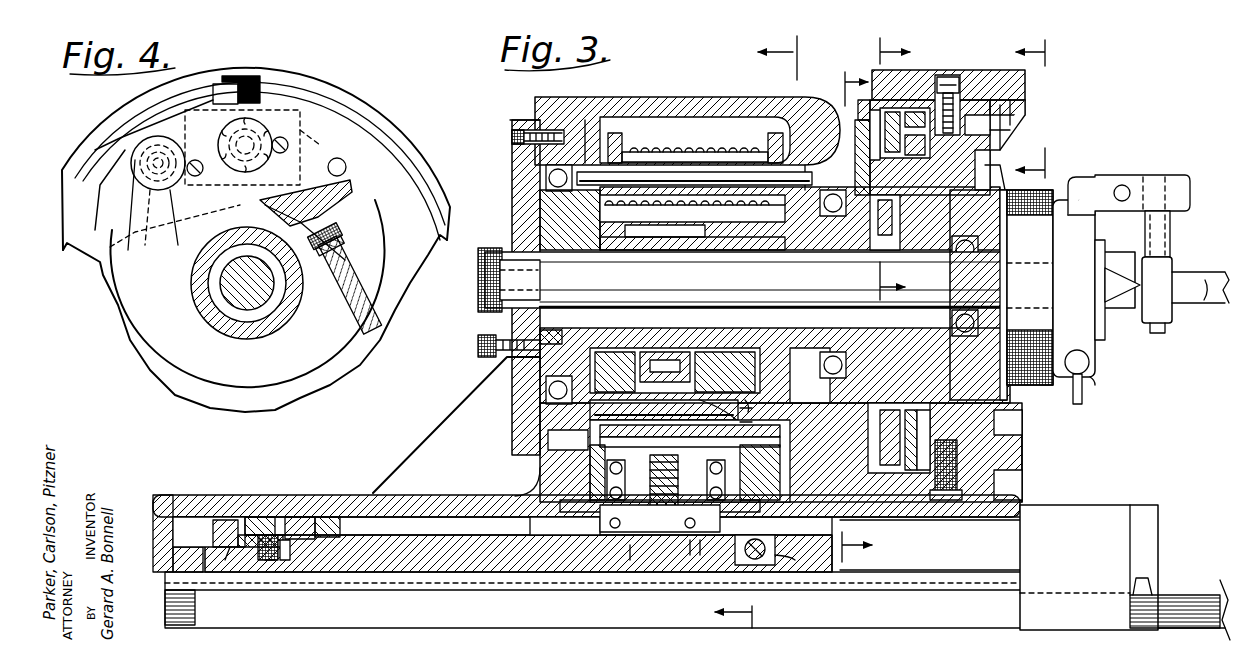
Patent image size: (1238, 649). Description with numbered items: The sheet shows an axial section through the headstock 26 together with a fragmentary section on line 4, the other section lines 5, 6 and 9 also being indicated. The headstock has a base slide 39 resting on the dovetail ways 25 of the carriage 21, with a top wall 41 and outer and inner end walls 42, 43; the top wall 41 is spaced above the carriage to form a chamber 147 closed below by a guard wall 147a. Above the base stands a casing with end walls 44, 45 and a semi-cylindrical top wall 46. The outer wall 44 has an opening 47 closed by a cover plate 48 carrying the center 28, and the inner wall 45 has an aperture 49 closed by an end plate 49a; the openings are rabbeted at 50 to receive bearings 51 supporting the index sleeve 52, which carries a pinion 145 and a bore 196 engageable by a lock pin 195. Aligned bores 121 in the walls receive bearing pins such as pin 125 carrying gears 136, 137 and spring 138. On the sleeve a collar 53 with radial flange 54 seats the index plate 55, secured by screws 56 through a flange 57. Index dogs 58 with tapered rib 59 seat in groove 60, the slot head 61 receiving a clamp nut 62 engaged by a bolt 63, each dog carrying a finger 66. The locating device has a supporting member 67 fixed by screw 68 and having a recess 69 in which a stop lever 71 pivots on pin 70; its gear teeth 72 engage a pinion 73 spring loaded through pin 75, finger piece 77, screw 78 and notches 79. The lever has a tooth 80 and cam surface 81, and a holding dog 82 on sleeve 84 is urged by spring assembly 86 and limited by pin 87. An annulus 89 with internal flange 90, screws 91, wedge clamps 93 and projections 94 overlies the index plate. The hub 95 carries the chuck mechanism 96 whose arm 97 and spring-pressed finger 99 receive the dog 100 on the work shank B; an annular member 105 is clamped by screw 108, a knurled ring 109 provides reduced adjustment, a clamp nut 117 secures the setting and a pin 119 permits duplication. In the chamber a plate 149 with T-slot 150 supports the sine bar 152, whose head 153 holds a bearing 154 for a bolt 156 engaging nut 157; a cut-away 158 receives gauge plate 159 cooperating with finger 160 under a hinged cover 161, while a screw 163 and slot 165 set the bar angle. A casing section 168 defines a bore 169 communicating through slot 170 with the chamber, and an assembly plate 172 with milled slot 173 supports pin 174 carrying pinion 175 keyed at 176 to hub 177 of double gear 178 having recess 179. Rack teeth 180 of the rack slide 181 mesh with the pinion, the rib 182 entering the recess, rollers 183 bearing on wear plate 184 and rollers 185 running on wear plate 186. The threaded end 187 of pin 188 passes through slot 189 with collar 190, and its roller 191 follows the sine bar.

In FIG. 3, the carriage 21 is at (1188, 645).
In FIG. 3, the dovetail ways 25 is at (1160, 600).
In FIG. 3, the headstock 26 is at (530, 112).
In FIG. 3, the center 28 is at (480, 292).
In FIG. 3, the base slide 39 is at (1112, 518).
In FIG. 3, the top wall 41 is at (429, 497).
In FIG. 3, the outer end wall 42 is at (158, 502).
In FIG. 3, the inner end wall 43 is at (1150, 520).
In FIG. 3, the outer end wall of casing 44 is at (555, 470).
In FIG. 3, the inner end wall of casing 45 is at (935, 458).
In FIG. 3, the top wall 46 is at (660, 100).
In FIG. 3, the opening 47 is at (600, 238).
In FIG. 3, the cover plate 48 is at (512, 152).
In FIG. 3, the aperture 49 is at (806, 347).
In FIG. 3, the end plate 49a is at (930, 400).
In FIG. 3, the rabbet 50 is at (512, 178).
In FIG. 3, the bearings 51 is at (540, 392).
In FIG. 3, the index sleeve 52 is at (745, 235).
In FIG. 3, the collar 53 is at (995, 237).
In FIG. 3, the radial flange 54 is at (930, 414).
In FIG. 3, the index plate 55 is at (930, 440).
In FIG. 3, the screws 56 is at (1020, 162).
In FIG. 3, the flange 57 is at (1010, 462).
In FIG. 4, the index dogs 58 is at (224, 88).
In FIG. 3, the index dogs 58 is at (928, 82).
In FIG. 3, the tapered rib 59 is at (982, 112).
In FIG. 3, the groove 60 is at (990, 102).
In FIG. 3, the enlarged head 61 is at (1030, 112).
In FIG. 3, the clamp nut 62 is at (922, 75).
In FIG. 3, the bolt 63 is at (952, 76).
In FIG. 4, the finger 66 is at (250, 90).
In FIG. 3, the finger 66 is at (862, 95).
In FIG. 4, the supporting member 67 is at (150, 320).
In FIG. 3, the supporting member 67 is at (958, 240).
In FIG. 4, the screw 68 is at (365, 238).
In FIG. 4, the recess 69 is at (135, 230).
In FIG. 3, the recess 69 is at (866, 238).
In FIG. 4, the pin 70 is at (345, 172).
In FIG. 4, the stop lever 71 is at (320, 145).
In FIG. 3, the stop lever 71 is at (885, 107).
In FIG. 4, the gear teeth 72 is at (185, 130).
In FIG. 4, the pinion 73 is at (125, 175).
In FIG. 4, the pin 75 is at (158, 232).
In FIG. 4, the finger piece 77 is at (132, 152).
In FIG. 4, the screw 78 is at (205, 185).
In FIG. 4, the notches 79 is at (190, 225).
In FIG. 4, the tooth 80 is at (214, 86).
In FIG. 4, the cam surface 81 is at (212, 96).
In FIG. 3, the holding dog 82 is at (915, 78).
In FIG. 3, the sleeve 84 is at (862, 105).
In FIG. 4, the spring assembly 86 is at (268, 132).
In FIG. 3, the spring assembly 86 is at (850, 138).
In FIG. 4, the pin 87 is at (356, 204).
In FIG. 3, the pin 87 is at (920, 238).
In FIG. 4, the annulus 89 is at (400, 135).
In FIG. 3, the annulus 89 is at (1030, 76).
In FIG. 3, the internal radial flange 90 is at (1005, 100).
In FIG. 3, the screws 91 is at (1030, 125).
In FIG. 3, the wedge clamps 93 is at (1020, 142).
In FIG. 3, the lateral projections 94 is at (1022, 490).
In FIG. 3, the hub portion 95 is at (1009, 336).
In FIG. 3, the rotative chuck mechanism 96 is at (1094, 378).
In FIG. 3, the arm 97 is at (1088, 182).
In FIG. 3, the spring-pressed finger 99 is at (1180, 186).
In FIG. 3, the dog 100 is at (1168, 228).
In FIG. 3, the annular member 105 is at (1082, 222).
In FIG. 3, the screw 108 is at (1090, 363).
In FIG. 3, the knurled ring 109 is at (1073, 388).
In FIG. 3, the clamp nut 117 is at (1112, 282).
In FIG. 3, the pin 119 is at (1003, 230).
In FIG. 3, the bores 121 is at (586, 120).
In FIG. 3, the bearing pin 125 is at (678, 173).
In FIG. 3, the gear 136 is at (772, 140).
In FIG. 3, the gear 137 is at (616, 138).
In FIG. 3, the spring 138 is at (720, 148).
In FIG. 3, the pinion 145 is at (680, 247).
In FIG. 3, the chamber 147 is at (473, 520).
In FIG. 3, the guard wall 147a is at (985, 595).
In FIG. 3, the plate 149 is at (583, 570).
In FIG. 3, the T-slot 150 is at (250, 560).
In FIG. 3, the sine bar 152 is at (345, 500).
In FIG. 3, the head 153 is at (262, 518).
In FIG. 3, the bearing 154 is at (306, 518).
In FIG. 3, the bolt 156 is at (278, 565).
In FIG. 3, the nut 157 is at (263, 552).
In FIG. 3, the cut-away 158 is at (327, 545).
In FIG. 3, the gauge plate 159 is at (230, 548).
In FIG. 3, the finger 160 is at (242, 523).
In FIG. 3, the hinged cover 161 is at (203, 497).
In FIG. 3, the screw 163 is at (758, 540).
In FIG. 3, the transverse slot 165 is at (778, 556).
In FIG. 3, the section 168 is at (755, 440).
In FIG. 3, the bore 169 is at (745, 400).
In FIG. 3, the slot 170 is at (760, 492).
In FIG. 3, the assembly plate 172 is at (750, 410).
In FIG. 3, the milled slot 173 is at (620, 340).
In FIG. 3, the pin 174 is at (750, 424).
In FIG. 3, the pinion 175 is at (645, 346).
In FIG. 3, the key 176 is at (700, 402).
In FIG. 3, the hub 177 is at (668, 352).
In FIG. 3, the double gear 178 is at (700, 362).
In FIG. 3, the annular recess 179 is at (742, 362).
In FIG. 3, the rack teeth 180 is at (620, 416).
In FIG. 3, the rack slide 181 is at (605, 462).
In FIG. 3, the rib 182 is at (740, 533).
In FIG. 3, the antifriction rollers 183 is at (745, 468).
In FIG. 3, the wear plate 184 is at (758, 456).
In FIG. 3, the antifriction rollers 185 is at (750, 480).
In FIG. 3, the wear plate 186 is at (536, 523).
In FIG. 3, the screw threaded end 187 is at (552, 438).
In FIG. 3, the pin 188 is at (662, 560).
In FIG. 3, the slot 189 is at (632, 548).
In FIG. 3, the antifriction collar 190 is at (695, 545).
In FIG. 3, the antifriction roller 191 is at (703, 545).
In FIG. 3, the lock pin 195 is at (480, 341).
In FIG. 3, the bore 196 is at (552, 332).
In FIG. 3, the section line 4- 4 is at (849, 316).
In FIG. 3, the section line 5- 5 is at (1039, 108).
In FIG. 3, the section line 6- 6 is at (764, 331).
In FIG. 3, the section line 9- 9 is at (884, 169).
In FIG. 3, the work arbor or shank B is at (1208, 282).